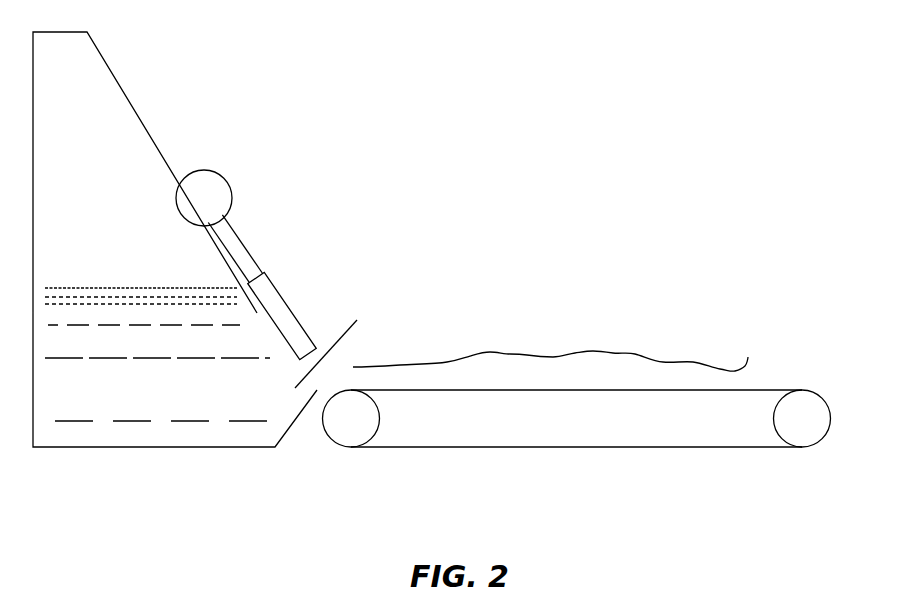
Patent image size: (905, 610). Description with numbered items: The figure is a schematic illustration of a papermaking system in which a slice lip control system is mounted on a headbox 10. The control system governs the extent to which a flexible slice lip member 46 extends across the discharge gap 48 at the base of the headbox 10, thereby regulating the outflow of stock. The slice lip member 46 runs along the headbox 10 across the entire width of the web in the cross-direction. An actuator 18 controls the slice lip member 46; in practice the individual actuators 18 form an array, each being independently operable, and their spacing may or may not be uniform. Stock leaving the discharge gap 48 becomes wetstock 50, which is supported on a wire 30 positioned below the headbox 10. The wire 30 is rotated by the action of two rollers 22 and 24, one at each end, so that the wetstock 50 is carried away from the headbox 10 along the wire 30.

The headbox 10 is at (175, 265).
The actuator 18 is at (229, 178).
The slice lip member 46 is at (286, 287).
The discharge gap 48 is at (354, 349).
The roller 22 is at (380, 444).
The roller 24 is at (813, 444).
The wire 30 is at (576, 444).
The wetstock 50 is at (550, 342).